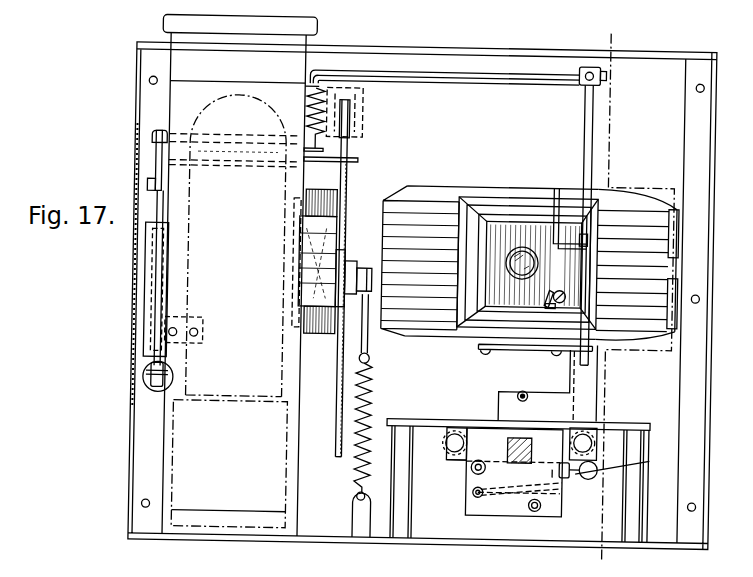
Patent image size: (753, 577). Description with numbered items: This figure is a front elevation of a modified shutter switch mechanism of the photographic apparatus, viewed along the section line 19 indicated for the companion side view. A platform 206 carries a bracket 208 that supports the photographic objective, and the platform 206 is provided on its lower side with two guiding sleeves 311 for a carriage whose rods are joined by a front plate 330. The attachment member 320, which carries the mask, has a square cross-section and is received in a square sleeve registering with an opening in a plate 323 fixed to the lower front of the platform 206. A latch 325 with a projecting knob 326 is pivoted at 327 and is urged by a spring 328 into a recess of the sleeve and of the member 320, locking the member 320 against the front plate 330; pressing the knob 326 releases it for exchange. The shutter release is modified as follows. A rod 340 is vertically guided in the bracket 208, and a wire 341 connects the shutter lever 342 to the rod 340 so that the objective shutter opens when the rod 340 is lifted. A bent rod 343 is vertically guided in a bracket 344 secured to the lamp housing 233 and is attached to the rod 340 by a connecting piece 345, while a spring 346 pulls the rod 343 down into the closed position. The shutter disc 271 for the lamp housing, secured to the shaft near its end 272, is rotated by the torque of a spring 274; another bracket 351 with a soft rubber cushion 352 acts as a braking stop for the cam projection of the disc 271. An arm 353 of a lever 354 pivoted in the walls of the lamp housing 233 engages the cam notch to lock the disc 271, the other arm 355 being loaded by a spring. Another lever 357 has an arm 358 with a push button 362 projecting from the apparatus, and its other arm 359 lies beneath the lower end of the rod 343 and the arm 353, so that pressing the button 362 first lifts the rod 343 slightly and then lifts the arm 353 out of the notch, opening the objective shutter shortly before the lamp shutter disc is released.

The section line 19- 19 is at (611, 552).
The lamp housing 233 is at (264, 80).
The lever 354 is at (231, 135).
The spring 346 is at (305, 122).
The lever 357 is at (227, 166).
The bracket 344 is at (317, 108).
The bracket 351 is at (364, 101).
The soft rubber cushion 352 is at (364, 135).
The arm 353 is at (353, 157).
The shutter disc 271 is at (342, 389).
The bent rod 343 is at (505, 74).
The connecting piece 345 is at (585, 80).
The rod 340 is at (586, 147).
The wire 341 is at (559, 210).
The shutter lever 342 is at (553, 293).
The arm 359 is at (304, 182).
The shaft end 272 is at (370, 254).
The spring 274 is at (377, 390).
The arm 355 is at (155, 150).
The arm 358 is at (163, 212).
The push button 362 is at (182, 375).
The platform 206 is at (440, 409).
The bracket 208 is at (613, 366).
The guiding sleeves 311 is at (452, 440).
The attachment member 320 is at (515, 445).
The front plate 330 is at (456, 452).
The pivot 327 is at (484, 469).
The spring 328 is at (528, 485).
The plate 323 is at (563, 493).
The latch 325 is at (584, 466).
The knob 326 is at (631, 468).